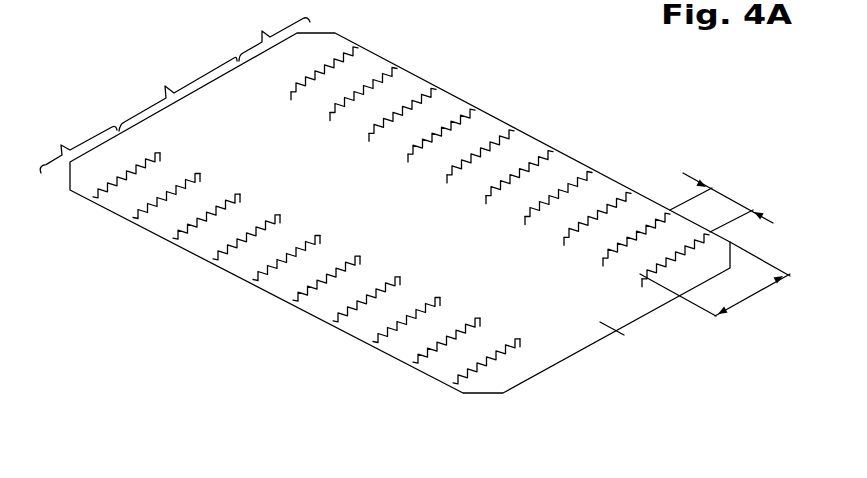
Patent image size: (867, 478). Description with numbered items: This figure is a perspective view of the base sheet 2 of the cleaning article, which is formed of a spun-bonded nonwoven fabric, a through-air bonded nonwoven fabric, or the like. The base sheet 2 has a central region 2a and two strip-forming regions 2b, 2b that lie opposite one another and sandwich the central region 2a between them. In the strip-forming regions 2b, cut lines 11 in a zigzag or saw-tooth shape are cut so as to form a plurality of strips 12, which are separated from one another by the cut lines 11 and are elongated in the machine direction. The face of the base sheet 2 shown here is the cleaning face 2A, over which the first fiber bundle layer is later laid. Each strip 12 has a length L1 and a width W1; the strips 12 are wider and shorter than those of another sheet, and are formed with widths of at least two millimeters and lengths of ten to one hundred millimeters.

The base sheet 2 is at (568, 360).
The cleaning face 2A is at (617, 330).
The central region 2a is at (178, 94).
The strip-forming regions 2b is at (175, 92).
The cut lines 11 is at (445, 170).
The strips 12 is at (403, 88).
The width W1 is at (721, 202).
The length L1 is at (715, 282).